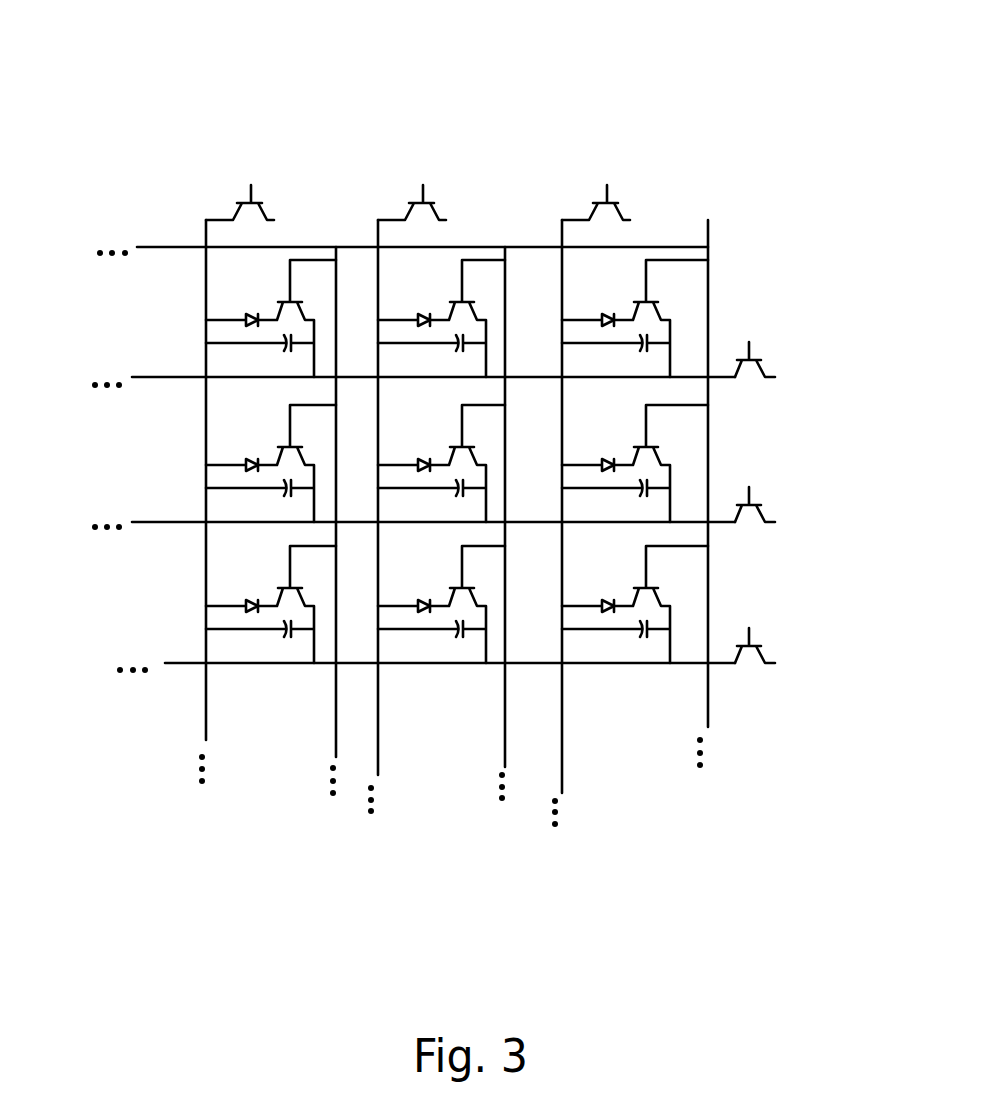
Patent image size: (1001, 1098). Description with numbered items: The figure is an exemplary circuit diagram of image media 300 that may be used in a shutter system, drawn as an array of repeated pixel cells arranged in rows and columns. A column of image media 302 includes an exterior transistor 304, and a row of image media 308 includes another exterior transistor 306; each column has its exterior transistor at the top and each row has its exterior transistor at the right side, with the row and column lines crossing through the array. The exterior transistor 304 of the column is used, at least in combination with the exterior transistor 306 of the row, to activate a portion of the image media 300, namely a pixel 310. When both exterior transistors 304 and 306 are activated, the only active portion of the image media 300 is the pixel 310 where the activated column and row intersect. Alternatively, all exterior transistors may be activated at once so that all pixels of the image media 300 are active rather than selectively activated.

The image media 300 is at (445, 420).
The column of image media 302 is at (378, 401).
The exterior transistor 304 is at (240, 218).
The exterior transistor 306 is at (762, 373).
The row of image media 308 is at (716, 294).
The pixel 310 is at (206, 305).